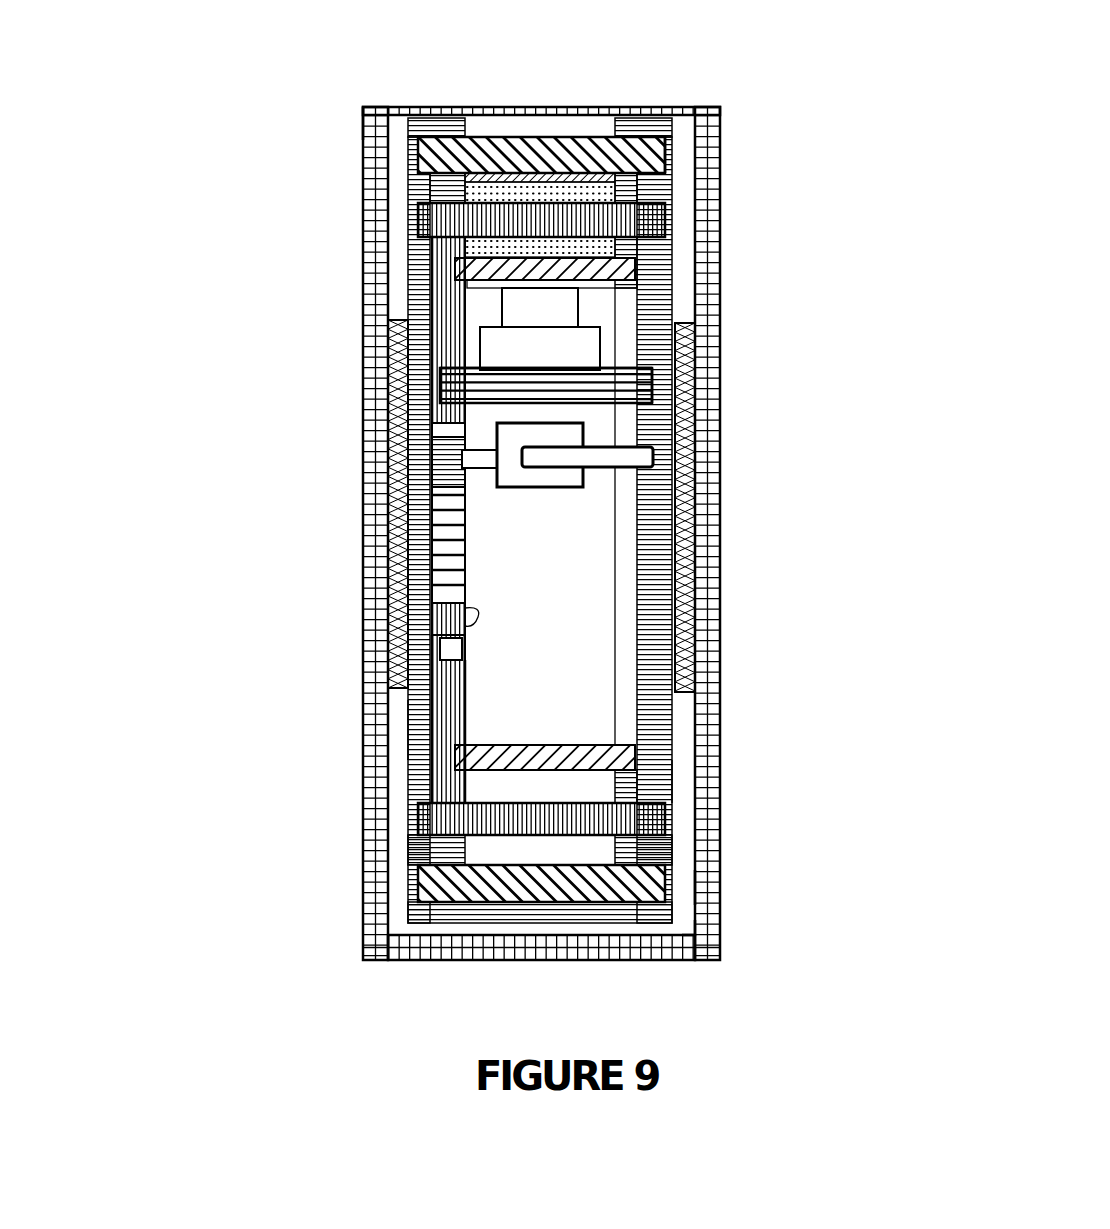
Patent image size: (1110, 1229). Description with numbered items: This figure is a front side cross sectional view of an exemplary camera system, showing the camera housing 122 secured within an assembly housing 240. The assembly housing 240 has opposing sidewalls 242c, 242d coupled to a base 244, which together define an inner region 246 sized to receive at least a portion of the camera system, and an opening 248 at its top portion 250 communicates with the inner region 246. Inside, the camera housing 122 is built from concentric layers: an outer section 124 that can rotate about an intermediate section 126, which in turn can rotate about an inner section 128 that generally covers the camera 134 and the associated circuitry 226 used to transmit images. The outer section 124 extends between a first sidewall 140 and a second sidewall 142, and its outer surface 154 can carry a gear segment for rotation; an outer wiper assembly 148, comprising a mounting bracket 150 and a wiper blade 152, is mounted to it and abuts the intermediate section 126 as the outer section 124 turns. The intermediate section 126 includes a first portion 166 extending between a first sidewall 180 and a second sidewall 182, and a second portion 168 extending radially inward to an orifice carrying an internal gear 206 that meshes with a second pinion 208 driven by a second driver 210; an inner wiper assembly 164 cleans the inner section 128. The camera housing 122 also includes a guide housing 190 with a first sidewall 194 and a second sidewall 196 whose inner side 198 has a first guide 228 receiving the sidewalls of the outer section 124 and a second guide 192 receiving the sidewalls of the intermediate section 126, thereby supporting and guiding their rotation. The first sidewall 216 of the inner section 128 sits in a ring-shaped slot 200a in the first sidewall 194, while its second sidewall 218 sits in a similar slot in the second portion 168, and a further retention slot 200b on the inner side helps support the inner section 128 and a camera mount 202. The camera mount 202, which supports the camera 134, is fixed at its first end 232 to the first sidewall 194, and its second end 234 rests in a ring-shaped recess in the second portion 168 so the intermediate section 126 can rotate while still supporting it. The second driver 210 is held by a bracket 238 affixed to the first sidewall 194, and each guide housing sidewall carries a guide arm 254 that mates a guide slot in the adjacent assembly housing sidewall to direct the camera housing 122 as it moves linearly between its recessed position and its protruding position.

The camera housing 122 is at (446, 936).
The outer section 124 is at (672, 178).
The intermediate section 126 is at (672, 238).
The inner section 128 is at (660, 760).
The camera 134 is at (667, 281).
The first sidewall 140 is at (665, 160).
The second sidewall 142 is at (405, 162).
The outer wiper assembly 148 is at (672, 217).
The mounting bracket 150 is at (400, 200).
The wiper blade 152 is at (405, 195).
The outer surface 154 is at (547, 140).
The inner wiper assembly 164 is at (415, 290).
The first portion 166 is at (405, 905).
The second portion 168 is at (440, 720).
The first sidewall 180 is at (672, 270).
The second sidewall 182 is at (425, 830).
The guide housing 190 is at (660, 790).
The second guide 192 is at (420, 875).
The first sidewall 194 is at (637, 768).
The second sidewall 196 is at (410, 735).
The inner side 198 is at (395, 615).
The slot 200a is at (672, 815).
The retention slot 200b is at (657, 397).
The camera mount 202 is at (600, 350).
The internal gear 206 is at (440, 560).
The second pinion 208 is at (400, 495).
The second driver 210 is at (545, 485).
The first sidewall 216 is at (672, 770).
The second sidewall 218 is at (410, 855).
The circuitry 226 is at (563, 305).
The first guide 228 is at (412, 140).
The first end 232 is at (657, 383).
The second end 234 is at (440, 385).
The bracket 238 is at (690, 468).
The assembly housing 240 is at (723, 940).
The sidewall 242c is at (723, 890).
The sidewall 242d is at (392, 930).
The base 244 is at (588, 950).
The inner region 246 is at (682, 920).
The opening 248 is at (500, 107).
The top portion 250 is at (363, 108).
The guide arm 254 is at (468, 610).